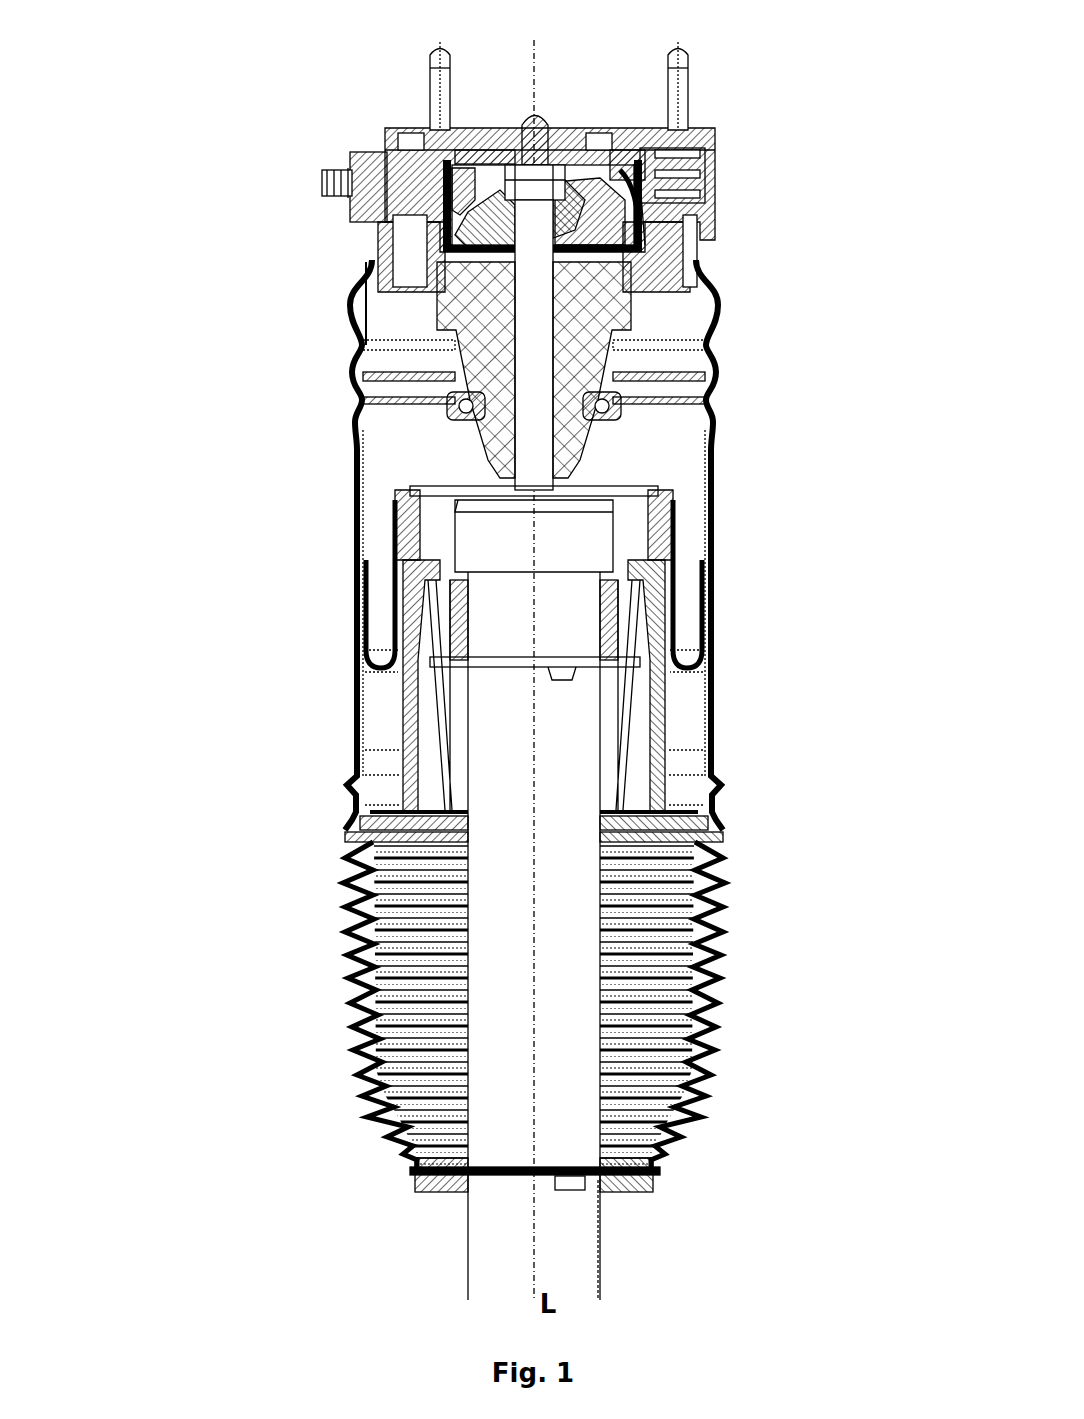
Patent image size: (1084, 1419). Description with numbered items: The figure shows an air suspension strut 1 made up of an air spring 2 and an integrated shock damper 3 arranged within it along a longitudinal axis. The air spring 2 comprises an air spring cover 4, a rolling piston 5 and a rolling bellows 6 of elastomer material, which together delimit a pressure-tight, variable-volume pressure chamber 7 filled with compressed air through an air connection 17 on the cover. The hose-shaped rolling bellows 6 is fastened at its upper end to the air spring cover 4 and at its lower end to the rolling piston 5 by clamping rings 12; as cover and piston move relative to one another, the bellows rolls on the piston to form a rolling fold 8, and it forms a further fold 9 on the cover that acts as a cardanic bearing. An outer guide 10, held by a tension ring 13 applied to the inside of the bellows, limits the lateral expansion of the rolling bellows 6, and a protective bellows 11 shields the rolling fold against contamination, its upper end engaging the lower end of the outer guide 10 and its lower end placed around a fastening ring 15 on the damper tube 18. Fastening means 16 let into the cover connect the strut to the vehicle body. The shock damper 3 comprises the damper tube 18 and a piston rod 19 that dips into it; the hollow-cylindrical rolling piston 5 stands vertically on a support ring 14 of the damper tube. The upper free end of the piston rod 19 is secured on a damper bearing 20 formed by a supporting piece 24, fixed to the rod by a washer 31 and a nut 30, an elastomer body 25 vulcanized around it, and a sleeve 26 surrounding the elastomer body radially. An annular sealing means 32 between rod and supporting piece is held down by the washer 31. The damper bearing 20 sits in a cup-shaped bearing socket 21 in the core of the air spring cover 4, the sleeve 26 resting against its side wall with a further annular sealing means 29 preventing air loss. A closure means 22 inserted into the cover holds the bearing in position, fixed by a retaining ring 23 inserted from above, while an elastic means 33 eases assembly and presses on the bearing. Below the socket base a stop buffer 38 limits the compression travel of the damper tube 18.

The air suspension strut 1 is at (262, 82).
The air spring 2 is at (282, 282).
The shock damper 3 is at (468, 1267).
The air spring cover 4 is at (387, 146).
The rolling piston 5 is at (406, 722).
The rolling bellows 6 is at (705, 358).
The pressure chamber 7 is at (403, 453).
The rolling fold 8 is at (380, 663).
The fold 9 is at (346, 310).
The outer guide 10 is at (710, 712).
The protective bellows 11 is at (722, 928).
The clamping rings 12 is at (702, 257).
The tension ring 13 is at (700, 400).
The support ring 14 is at (488, 660).
The fastening ring 15 is at (585, 1170).
The fastening means 16 is at (438, 72).
The air connection 17 is at (322, 182).
The damper tube 18 is at (598, 1250).
The piston rod 19 is at (550, 492).
The damper bearing 20 is at (468, 198).
The bearing socket 21 is at (632, 228).
The closure means 22 is at (463, 160).
The retaining ring 23 is at (630, 176).
The supporting piece 24 is at (488, 196).
The elastomer body 25 is at (607, 186).
The sleeve 26 is at (640, 243).
The annular sealing means 29 is at (627, 190).
The nut 30 is at (530, 196).
The washer 31 is at (568, 190).
The annular sealing means 32 is at (495, 226).
The elastic means 33 is at (645, 163).
The stop buffer 38 is at (462, 345).